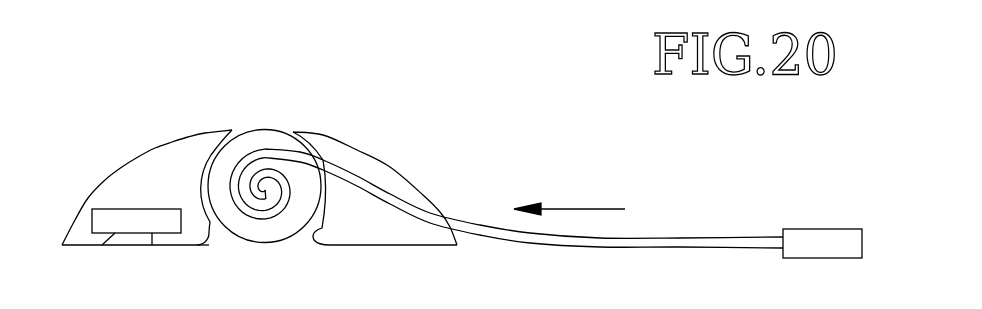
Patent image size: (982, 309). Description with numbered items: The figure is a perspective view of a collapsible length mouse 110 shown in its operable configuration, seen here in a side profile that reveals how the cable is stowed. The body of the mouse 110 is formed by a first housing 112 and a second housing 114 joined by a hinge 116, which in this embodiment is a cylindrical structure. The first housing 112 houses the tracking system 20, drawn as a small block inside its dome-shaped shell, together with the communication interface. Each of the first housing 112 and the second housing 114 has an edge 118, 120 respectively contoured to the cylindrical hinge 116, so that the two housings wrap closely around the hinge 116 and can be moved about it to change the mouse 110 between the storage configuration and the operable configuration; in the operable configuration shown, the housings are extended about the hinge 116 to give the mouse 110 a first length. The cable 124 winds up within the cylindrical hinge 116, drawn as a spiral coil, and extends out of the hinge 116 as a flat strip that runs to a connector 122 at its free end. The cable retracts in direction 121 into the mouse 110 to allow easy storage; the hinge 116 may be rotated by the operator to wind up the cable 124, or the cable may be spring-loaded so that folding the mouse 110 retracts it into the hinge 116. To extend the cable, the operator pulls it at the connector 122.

The collapsible length mouse 110 is at (466, 134).
The first housing 112 is at (203, 140).
The second housing 114 is at (391, 160).
The hinge 116 is at (248, 245).
The edge 118 is at (202, 176).
The edge 120 is at (323, 143).
The direction 121 is at (596, 208).
The connector 122 is at (832, 238).
The cable 124 is at (485, 224).
The tracking system 20 is at (116, 214).